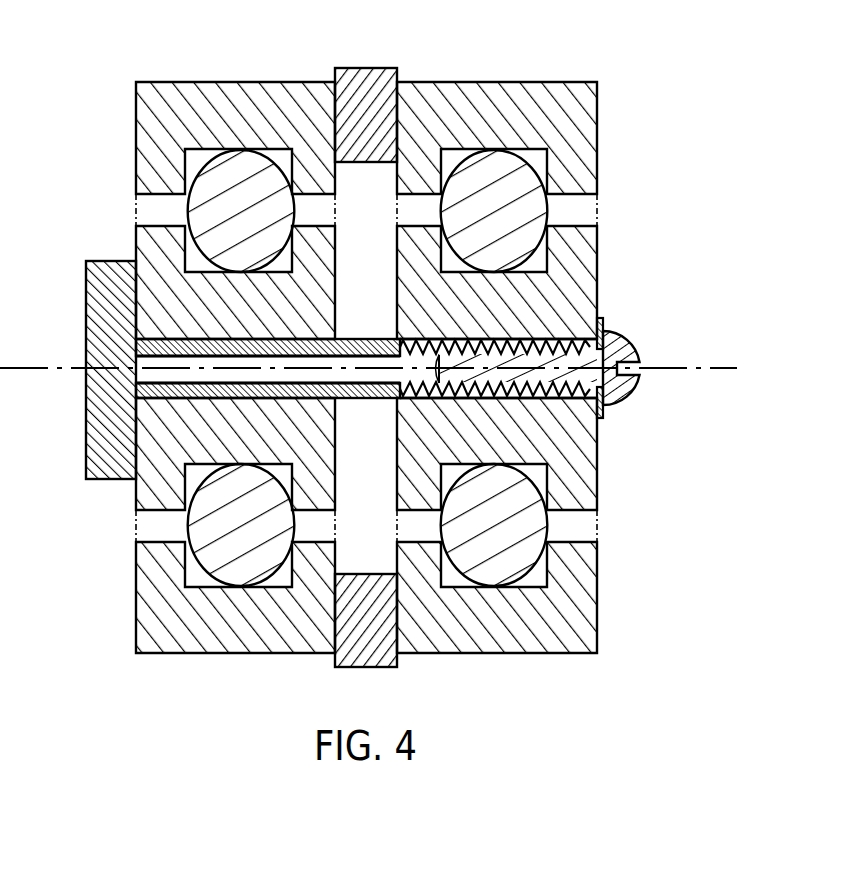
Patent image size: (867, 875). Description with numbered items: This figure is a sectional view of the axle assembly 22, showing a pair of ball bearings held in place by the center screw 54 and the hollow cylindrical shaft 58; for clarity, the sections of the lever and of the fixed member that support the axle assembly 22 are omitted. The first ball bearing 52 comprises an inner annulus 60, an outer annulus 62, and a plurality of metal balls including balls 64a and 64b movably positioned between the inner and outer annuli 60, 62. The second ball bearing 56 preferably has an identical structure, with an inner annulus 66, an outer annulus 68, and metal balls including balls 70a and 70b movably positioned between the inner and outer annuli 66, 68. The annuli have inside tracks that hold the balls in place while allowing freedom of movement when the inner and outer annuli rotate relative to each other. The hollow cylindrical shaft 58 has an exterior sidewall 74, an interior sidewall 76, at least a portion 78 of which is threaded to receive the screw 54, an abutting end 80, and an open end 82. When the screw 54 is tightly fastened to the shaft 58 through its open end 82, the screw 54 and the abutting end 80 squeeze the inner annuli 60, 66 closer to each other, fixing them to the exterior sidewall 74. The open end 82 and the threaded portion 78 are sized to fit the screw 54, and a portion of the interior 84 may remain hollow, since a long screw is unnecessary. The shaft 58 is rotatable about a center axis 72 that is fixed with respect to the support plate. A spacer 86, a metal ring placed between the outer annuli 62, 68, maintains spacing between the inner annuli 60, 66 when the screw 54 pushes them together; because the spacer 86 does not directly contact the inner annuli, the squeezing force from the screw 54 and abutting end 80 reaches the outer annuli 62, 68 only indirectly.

The axle assembly 22 is at (672, 57).
The first ball bearing 52 is at (494, 79).
The center screw 54 is at (625, 345).
The second ball bearing 56 is at (214, 78).
The hollow cylindrical shaft 58 is at (153, 388).
The inner annulus 60 is at (583, 280).
The outer annulus 62 is at (590, 127).
The ball 64a is at (540, 210).
The ball 64b is at (540, 527).
The inner annulus 66 is at (148, 245).
The outer annulus 68 is at (150, 132).
The ball 70a is at (196, 210).
The ball 70b is at (197, 527).
The center axis 72 is at (702, 367).
The exterior sidewall 74 is at (365, 339).
The interior sidewall 76 is at (305, 380).
The threaded portion 78 is at (482, 407).
The abutting end 80 is at (95, 293).
The open end 82 is at (620, 393).
The hollow interior 84 is at (437, 360).
The spacer 86 is at (368, 82).